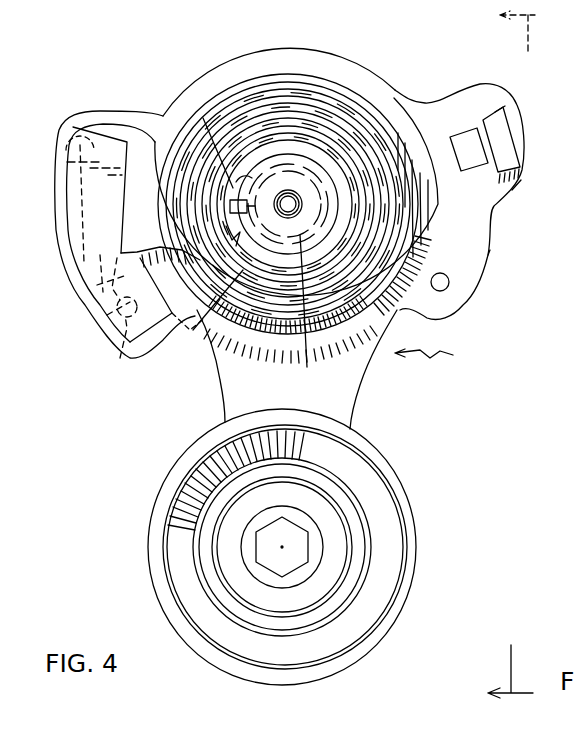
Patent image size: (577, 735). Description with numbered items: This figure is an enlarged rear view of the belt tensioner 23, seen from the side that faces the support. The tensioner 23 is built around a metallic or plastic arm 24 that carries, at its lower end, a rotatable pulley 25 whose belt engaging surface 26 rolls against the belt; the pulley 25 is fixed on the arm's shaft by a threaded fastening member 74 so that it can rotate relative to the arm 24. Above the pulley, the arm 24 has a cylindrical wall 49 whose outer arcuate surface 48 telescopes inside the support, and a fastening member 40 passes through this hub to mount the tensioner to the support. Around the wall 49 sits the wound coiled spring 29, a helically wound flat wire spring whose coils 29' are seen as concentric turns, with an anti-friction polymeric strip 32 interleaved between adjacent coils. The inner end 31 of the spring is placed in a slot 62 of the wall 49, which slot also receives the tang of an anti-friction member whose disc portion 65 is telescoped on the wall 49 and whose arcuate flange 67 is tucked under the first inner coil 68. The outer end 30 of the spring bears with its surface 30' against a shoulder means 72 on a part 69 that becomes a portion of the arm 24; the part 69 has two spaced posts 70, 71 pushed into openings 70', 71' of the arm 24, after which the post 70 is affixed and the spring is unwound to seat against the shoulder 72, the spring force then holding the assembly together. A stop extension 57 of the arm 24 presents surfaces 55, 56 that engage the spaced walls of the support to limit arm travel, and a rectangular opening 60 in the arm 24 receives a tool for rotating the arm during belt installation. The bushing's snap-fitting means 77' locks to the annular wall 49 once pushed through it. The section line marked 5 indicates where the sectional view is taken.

The belt tensioner 23 is at (440, 357).
The arm 24 is at (343, 390).
The pulley 25 is at (150, 494).
The belt engaging surface 26 is at (395, 472).
The wound coiled spring 29 is at (343, 183).
The coils 29' is at (463, 248).
The end of spring 30 is at (78, 286).
The surface of spring 30' is at (168, 350).
The end of spring 31 is at (230, 206).
The anti-friction polymeric strip 32 is at (243, 93).
The fastening member 40 is at (298, 200).
The outer arcuate surface 48 is at (322, 108).
The cylindrical wall 49 is at (280, 143).
The surface on stop extension 55 is at (522, 181).
The surface on stop extension 56 is at (503, 108).
The stop extension 57 is at (512, 138).
The rectangular opening 60 is at (463, 128).
The slot 62 is at (237, 183).
The disc portion 65 is at (311, 57).
The arcuate flange 67 is at (230, 244).
The first inner coil 68 is at (207, 316).
The part 69 is at (113, 143).
The post 70 is at (88, 328).
The opening 70' is at (95, 357).
The post 71 is at (76, 177).
The opening 71' is at (58, 144).
The shoulder means 72 is at (120, 252).
The threaded fastening member 74 is at (297, 547).
The snap-fitting means 77' is at (251, 250).
The section line 5- 5 is at (501, 354).